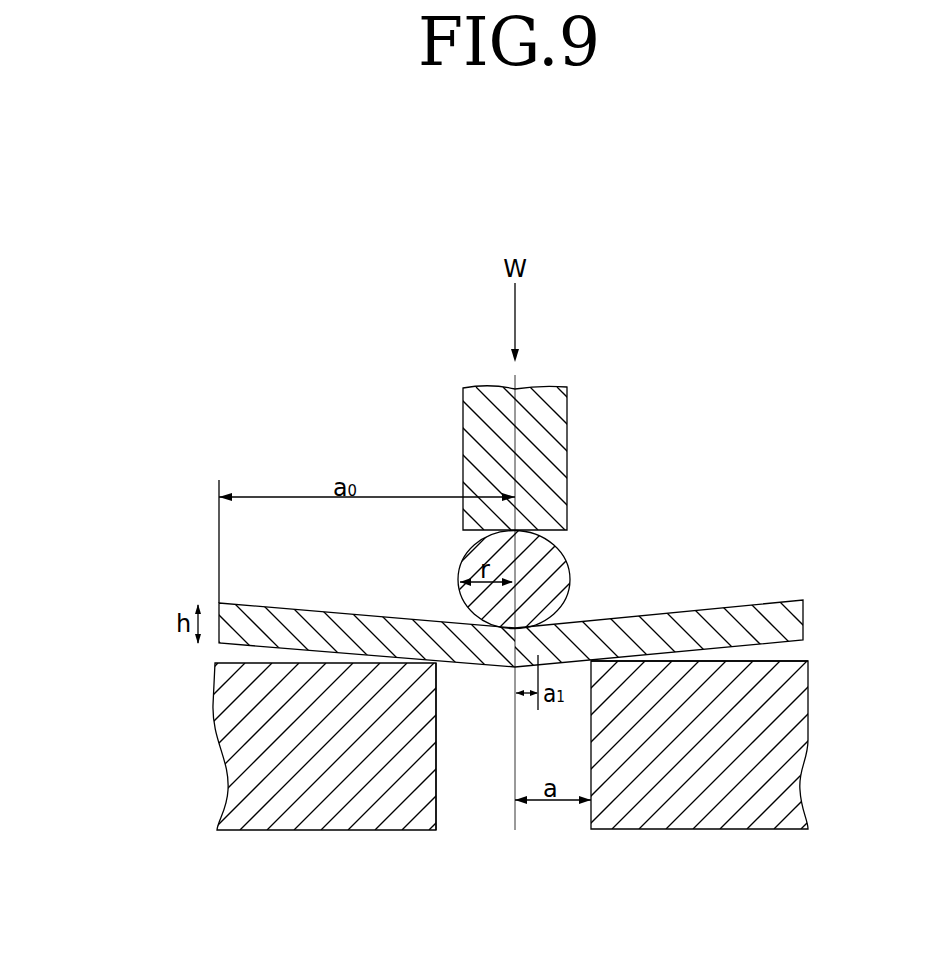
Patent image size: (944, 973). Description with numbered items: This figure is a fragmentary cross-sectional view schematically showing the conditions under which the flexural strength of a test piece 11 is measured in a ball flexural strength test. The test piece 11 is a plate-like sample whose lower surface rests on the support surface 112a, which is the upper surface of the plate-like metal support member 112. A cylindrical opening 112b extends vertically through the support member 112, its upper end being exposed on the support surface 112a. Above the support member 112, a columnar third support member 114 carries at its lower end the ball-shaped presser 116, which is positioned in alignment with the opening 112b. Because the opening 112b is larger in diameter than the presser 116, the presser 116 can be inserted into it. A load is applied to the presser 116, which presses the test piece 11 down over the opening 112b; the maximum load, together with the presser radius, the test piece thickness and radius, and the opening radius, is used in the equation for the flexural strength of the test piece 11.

The test piece 11 is at (312, 623).
The third support member 114 is at (557, 433).
The presser 116 is at (565, 575).
The support member 112 is at (195, 743).
The support surface 112a is at (762, 662).
The opening 112b is at (437, 778).